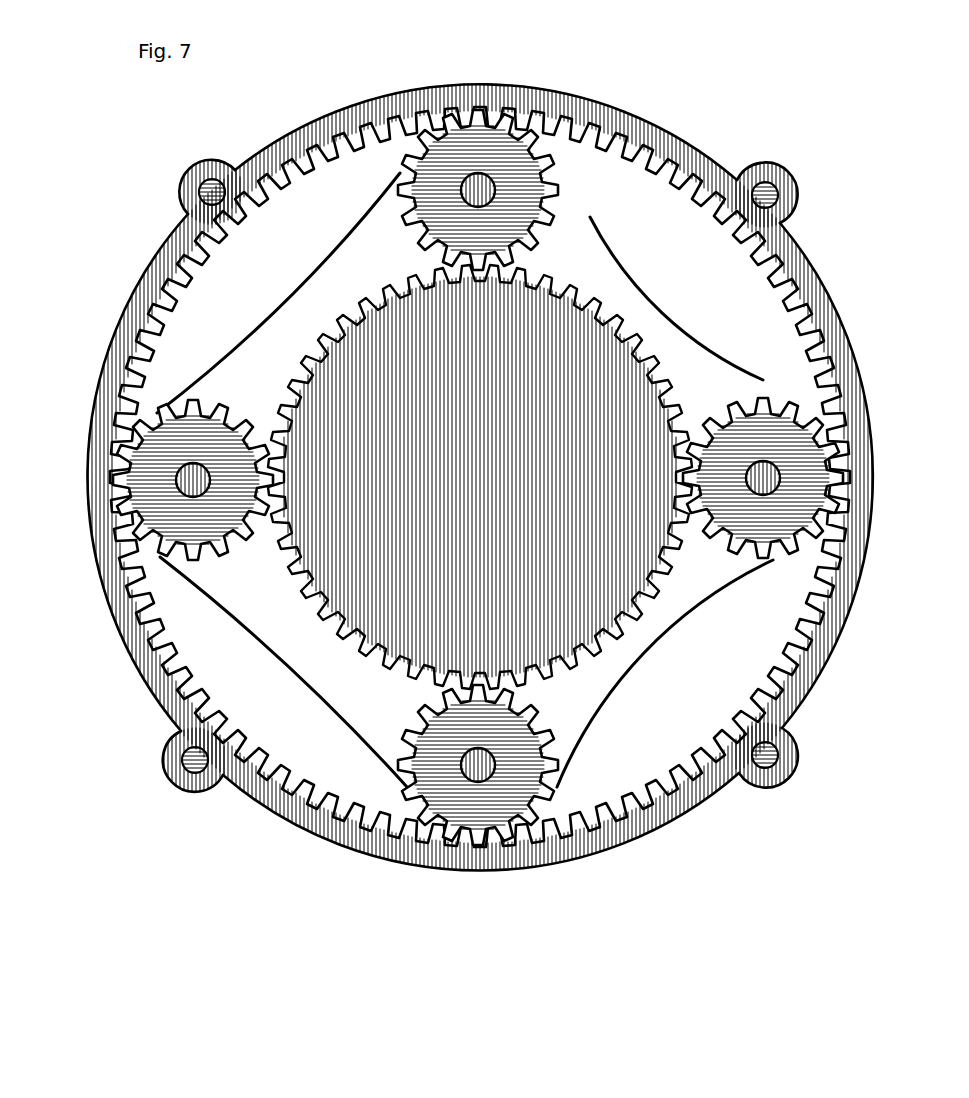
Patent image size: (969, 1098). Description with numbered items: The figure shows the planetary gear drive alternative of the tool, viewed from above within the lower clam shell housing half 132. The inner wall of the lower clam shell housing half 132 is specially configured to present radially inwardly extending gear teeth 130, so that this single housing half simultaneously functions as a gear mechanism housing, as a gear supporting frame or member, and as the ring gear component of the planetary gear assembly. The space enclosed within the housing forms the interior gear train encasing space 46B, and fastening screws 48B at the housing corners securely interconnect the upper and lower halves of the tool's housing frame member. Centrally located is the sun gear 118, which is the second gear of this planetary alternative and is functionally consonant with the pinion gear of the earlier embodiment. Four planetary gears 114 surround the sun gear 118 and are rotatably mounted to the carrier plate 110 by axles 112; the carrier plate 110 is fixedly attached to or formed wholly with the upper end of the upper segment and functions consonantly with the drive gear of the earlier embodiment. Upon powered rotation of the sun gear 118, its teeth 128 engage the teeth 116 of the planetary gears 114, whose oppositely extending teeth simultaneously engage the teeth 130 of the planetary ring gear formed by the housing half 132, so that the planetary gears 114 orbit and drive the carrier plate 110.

The carrier plate 110 is at (700, 360).
The axles 112 is at (474, 185).
The planetary gears 114 is at (513, 175).
The teeth of the planetary gears 116 is at (554, 182).
The sun gear 118 is at (587, 360).
The teeth of the sun gear 128 is at (330, 612).
The radially inwardly extending gear teeth 130 is at (692, 147).
The lower clam shell housing half 132 is at (437, 85).
The interior gear train encasing space 46B is at (290, 718).
The fastening screws 48B is at (192, 173).